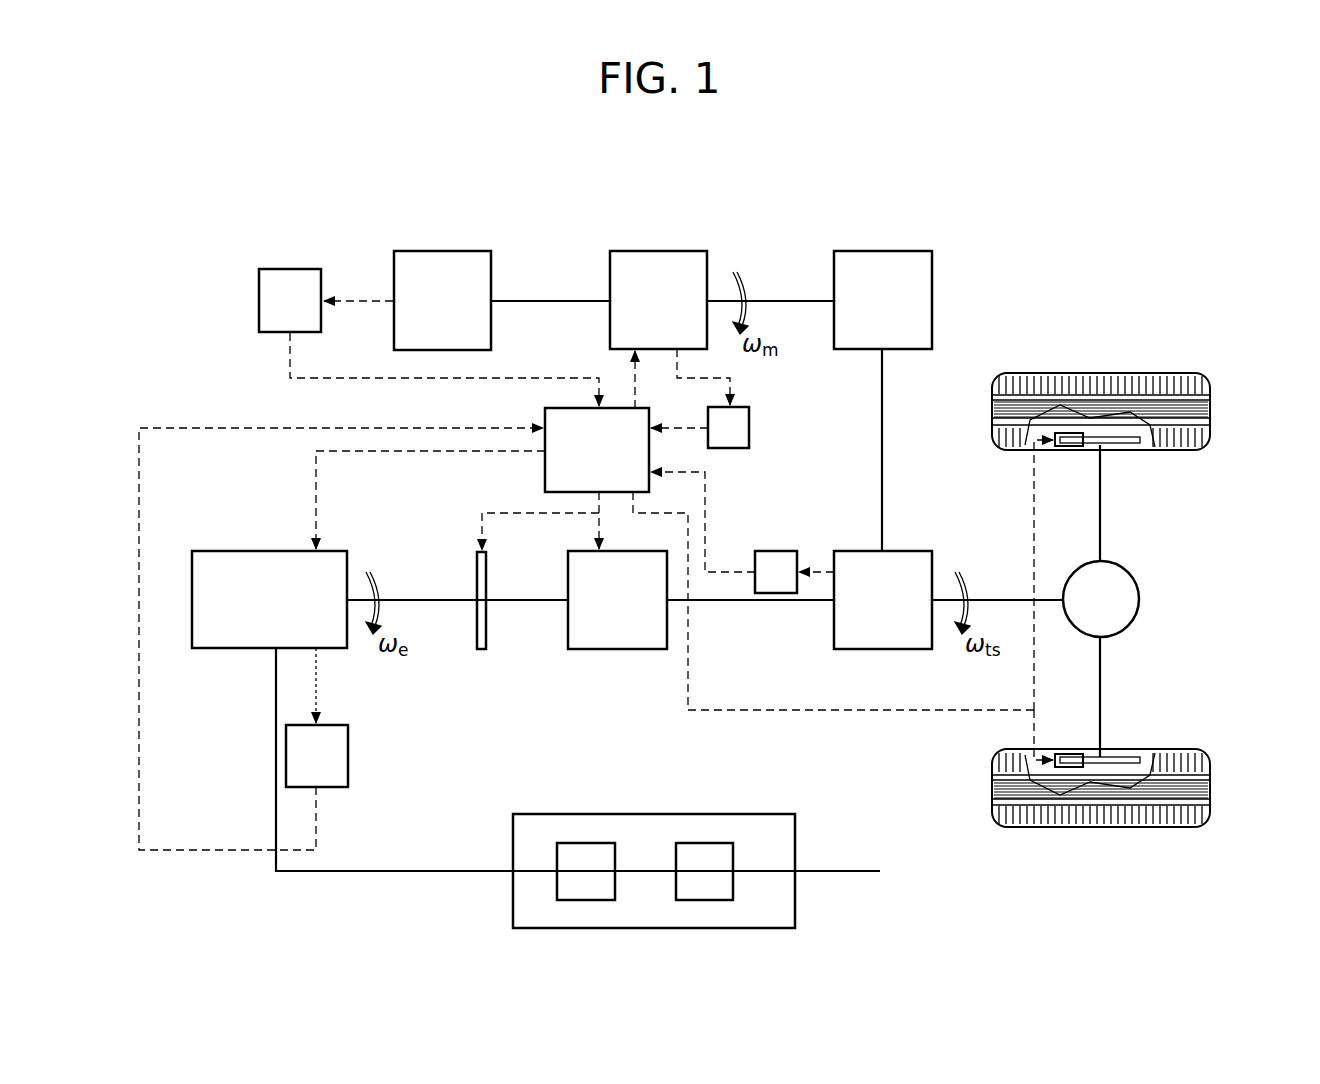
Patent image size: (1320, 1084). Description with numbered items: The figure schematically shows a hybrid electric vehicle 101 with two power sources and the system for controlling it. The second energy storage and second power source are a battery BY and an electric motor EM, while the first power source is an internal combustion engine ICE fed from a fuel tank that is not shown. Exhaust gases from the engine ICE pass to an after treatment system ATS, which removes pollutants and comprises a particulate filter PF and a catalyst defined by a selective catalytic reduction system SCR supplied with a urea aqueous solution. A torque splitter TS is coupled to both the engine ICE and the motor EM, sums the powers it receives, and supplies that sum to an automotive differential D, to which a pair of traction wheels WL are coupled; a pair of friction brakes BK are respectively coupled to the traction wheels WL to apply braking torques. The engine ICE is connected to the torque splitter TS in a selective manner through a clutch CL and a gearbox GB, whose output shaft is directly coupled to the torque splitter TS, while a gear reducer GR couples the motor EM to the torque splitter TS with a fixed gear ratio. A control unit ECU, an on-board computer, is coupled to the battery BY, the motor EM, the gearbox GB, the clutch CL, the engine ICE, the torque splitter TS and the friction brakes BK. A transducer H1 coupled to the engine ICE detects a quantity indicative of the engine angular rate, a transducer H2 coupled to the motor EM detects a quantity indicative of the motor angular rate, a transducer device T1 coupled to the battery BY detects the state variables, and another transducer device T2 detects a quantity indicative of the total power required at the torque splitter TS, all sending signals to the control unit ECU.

The vehicle 101 is at (1102, 176).
The transducer device T1 is at (279, 277).
The battery BY is at (479, 256).
The electric motor EM is at (672, 252).
The gear reducer GR is at (918, 254).
The control unit ECU is at (597, 450).
The transducer H2 is at (745, 432).
The internal combustion engine ICE is at (244, 570).
The clutch CL is at (485, 652).
The gearbox GB is at (625, 640).
The transducer device T2 is at (786, 550).
The torque splitter TS is at (918, 560).
The transducer H1 is at (337, 755).
The after treatment system ATS is at (648, 822).
The particulate filter PF is at (587, 852).
The selective catalytic reduction system SCR is at (705, 852).
The automotive differential D is at (1122, 588).
The traction wheels WL is at (1243, 355).
The friction brakes BK is at (1059, 450).